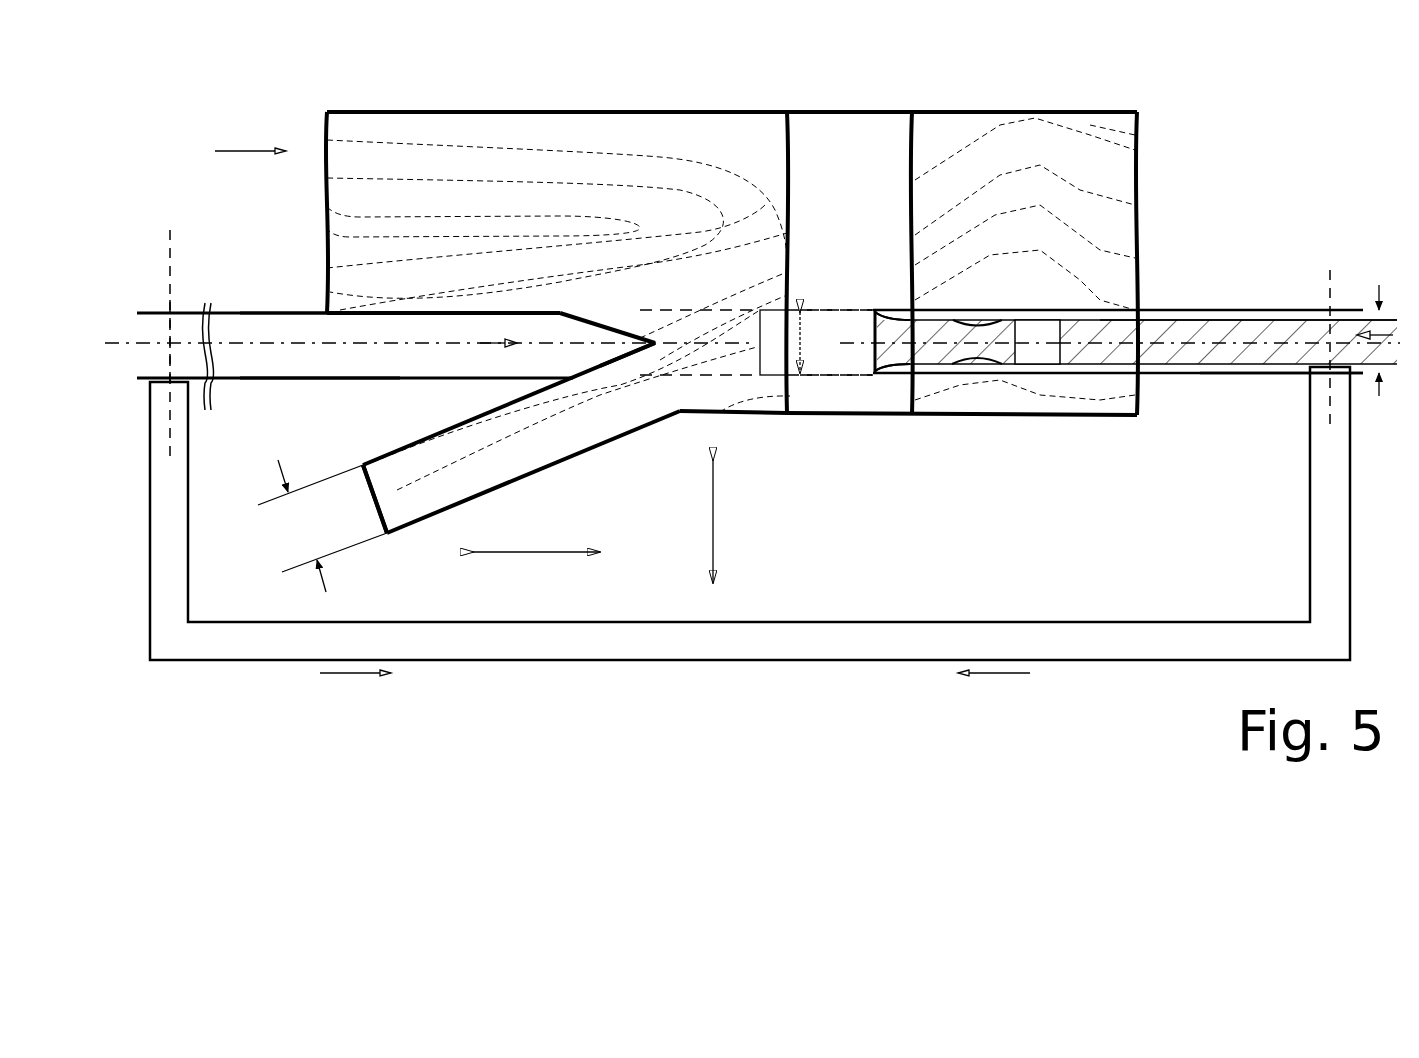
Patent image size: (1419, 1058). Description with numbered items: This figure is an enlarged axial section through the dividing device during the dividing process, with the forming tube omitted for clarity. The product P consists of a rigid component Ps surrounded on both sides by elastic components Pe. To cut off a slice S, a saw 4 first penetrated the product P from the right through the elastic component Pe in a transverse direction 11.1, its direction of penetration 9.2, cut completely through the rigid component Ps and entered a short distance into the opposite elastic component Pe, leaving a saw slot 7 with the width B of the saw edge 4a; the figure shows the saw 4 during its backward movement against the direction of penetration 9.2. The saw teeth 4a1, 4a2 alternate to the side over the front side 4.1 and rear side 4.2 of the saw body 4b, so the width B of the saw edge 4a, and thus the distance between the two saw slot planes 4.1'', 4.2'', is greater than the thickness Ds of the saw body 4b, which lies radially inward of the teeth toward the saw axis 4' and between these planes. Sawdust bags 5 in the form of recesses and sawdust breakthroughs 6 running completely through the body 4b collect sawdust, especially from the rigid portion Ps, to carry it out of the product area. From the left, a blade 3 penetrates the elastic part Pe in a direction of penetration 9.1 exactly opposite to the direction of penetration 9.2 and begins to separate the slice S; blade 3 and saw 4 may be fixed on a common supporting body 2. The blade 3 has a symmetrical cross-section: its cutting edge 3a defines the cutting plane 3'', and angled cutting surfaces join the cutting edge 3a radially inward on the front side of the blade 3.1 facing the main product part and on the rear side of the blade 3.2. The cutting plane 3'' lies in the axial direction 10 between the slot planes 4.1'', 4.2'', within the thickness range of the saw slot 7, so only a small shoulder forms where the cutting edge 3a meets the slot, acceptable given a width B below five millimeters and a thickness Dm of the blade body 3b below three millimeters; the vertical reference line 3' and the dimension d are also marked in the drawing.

The supporting body 2 is at (1150, 633).
The blade 3 is at (752, 356).
The tube rear end plane 3' is at (187, 319).
The cutting plane 3'' is at (136, 343).
The front side of the blade 3.1 is at (300, 310).
The rear side of the blade 3.2 is at (310, 380).
The cutting edge 3a is at (650, 340).
The blade body 3b is at (263, 342).
The saw 4 is at (1135, 341).
The saw axis 4' is at (1301, 345).
The front side of the saw body 4.1 is at (1248, 278).
The rear side of the saw body 4.2 is at (1281, 423).
The saw slot plane 4.1'' is at (833, 274).
The saw slot plane 4.2'' is at (819, 428).
The saw edge 4a is at (871, 378).
The saw tooth 4a1 is at (878, 310).
The saw tooth 4a2 is at (877, 376).
The saw body 4b is at (1225, 352).
The sawdust bag 5 is at (976, 362).
The sawdust breakthrough 6 is at (1038, 355).
The saw slot 7 is at (756, 342).
The direction of penetration 9.1 is at (351, 689).
The direction of penetration 9.2 is at (996, 689).
The axial direction 10 is at (711, 523).
The transverse direction 11.1 is at (538, 560).
The width of the saw edge B is at (803, 344).
The slice S is at (387, 499).
The thickness d is at (302, 526).
The thickness of the blade body Dm is at (233, 320).
The thickness of the saw body Ds is at (1375, 356).
The product P is at (238, 153).
The elastic component Pe is at (698, 342).
The rigid component Ps is at (850, 260).